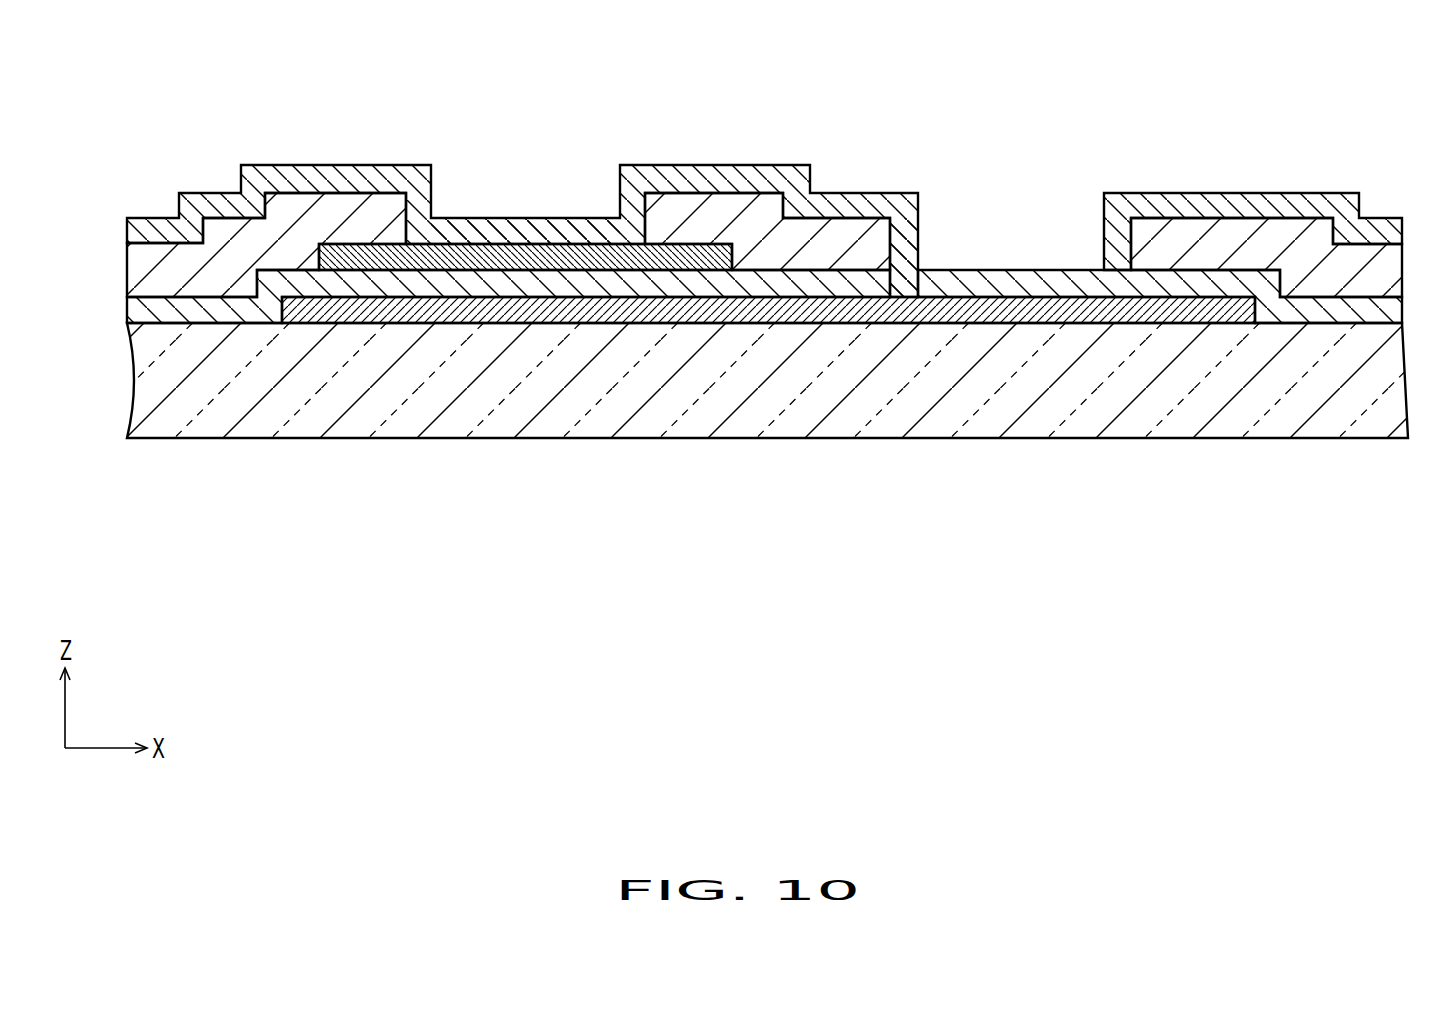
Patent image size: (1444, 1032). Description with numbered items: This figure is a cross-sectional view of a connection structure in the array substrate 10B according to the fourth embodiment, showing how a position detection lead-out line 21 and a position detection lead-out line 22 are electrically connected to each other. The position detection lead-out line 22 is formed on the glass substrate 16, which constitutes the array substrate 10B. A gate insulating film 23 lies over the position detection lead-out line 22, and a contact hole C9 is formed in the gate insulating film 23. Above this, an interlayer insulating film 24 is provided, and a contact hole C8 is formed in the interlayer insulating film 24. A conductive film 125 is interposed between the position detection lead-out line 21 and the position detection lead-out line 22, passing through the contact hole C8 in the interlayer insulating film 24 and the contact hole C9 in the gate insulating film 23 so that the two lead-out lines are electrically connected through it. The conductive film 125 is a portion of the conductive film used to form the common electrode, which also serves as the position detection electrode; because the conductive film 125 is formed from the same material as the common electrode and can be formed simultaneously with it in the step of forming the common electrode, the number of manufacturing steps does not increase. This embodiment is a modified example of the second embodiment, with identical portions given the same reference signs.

The array substrate 10B is at (1368, 130).
The glass substrate 16 is at (330, 393).
The position detection lead-out line 22 is at (588, 300).
The position detection lead-out line 21 is at (495, 262).
The interlayer insulating film 24 is at (313, 225).
The conductive film 125 is at (716, 183).
The gate insulating film 23 is at (1307, 313).
The contact hole C8 is at (432, 213).
The contact hole C9 is at (893, 287).